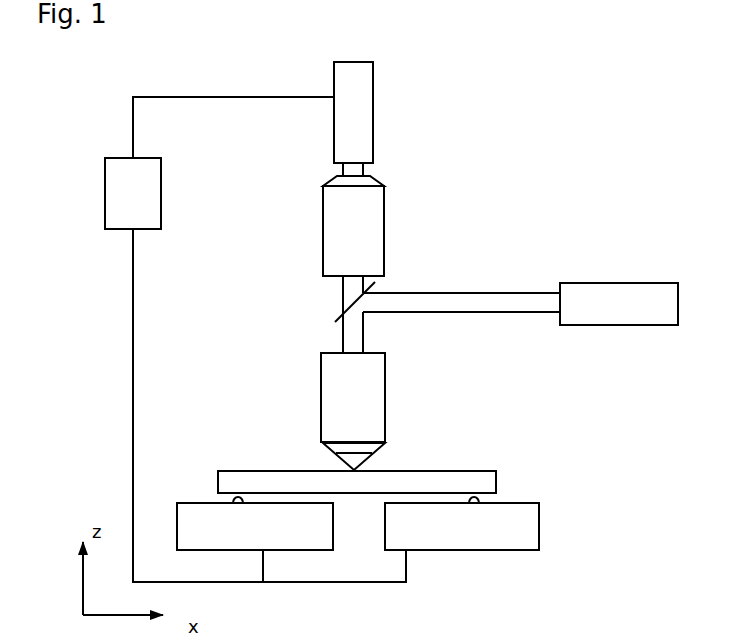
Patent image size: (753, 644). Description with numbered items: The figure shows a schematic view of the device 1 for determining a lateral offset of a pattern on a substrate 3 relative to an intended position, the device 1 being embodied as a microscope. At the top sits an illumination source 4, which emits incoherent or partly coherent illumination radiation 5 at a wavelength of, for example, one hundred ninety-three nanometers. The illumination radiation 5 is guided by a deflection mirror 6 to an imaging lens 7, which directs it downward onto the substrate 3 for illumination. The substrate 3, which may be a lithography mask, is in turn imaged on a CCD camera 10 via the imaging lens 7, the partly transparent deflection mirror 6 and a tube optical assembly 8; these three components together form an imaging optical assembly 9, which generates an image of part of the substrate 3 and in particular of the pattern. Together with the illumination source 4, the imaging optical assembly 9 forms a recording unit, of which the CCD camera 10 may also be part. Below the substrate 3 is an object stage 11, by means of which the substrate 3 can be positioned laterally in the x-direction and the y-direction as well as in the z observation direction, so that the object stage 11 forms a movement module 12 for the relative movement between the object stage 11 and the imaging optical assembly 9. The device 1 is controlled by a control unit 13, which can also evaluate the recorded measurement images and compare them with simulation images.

The device 1 is at (376, 316).
The substrate 3 is at (268, 470).
The illumination source 4 is at (643, 285).
The illumination radiation 5 is at (485, 293).
The deflection mirror 6 is at (338, 318).
The imaging lens 7 is at (322, 407).
The tube optical assembly 8 is at (322, 270).
The imaging optical assembly 9 is at (242, 288).
The CCD camera 10 is at (375, 108).
The object stage 11 is at (292, 550).
The movement module 12 is at (412, 517).
The control unit 13 is at (162, 212).